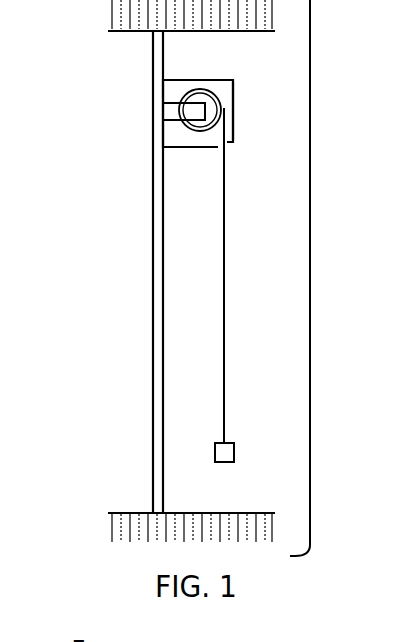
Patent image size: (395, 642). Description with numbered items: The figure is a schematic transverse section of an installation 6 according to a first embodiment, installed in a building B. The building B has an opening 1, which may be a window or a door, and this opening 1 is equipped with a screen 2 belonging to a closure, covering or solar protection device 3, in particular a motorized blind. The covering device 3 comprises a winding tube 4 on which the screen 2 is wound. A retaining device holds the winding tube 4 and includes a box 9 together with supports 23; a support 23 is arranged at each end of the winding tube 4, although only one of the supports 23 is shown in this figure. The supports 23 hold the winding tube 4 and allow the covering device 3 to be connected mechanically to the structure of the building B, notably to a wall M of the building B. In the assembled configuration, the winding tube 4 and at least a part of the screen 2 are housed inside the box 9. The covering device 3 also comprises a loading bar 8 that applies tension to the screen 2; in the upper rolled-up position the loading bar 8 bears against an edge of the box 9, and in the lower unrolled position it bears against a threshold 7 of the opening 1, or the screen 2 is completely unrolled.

The opening 1 is at (140, 210).
The screen 2 is at (226, 253).
The covering device 3 is at (190, 92).
The winding tube 4 is at (195, 93).
The installation 6 is at (310, 277).
The threshold 7 is at (131, 513).
The loading bar 8 is at (236, 450).
The box 9 is at (235, 117).
The support 23 is at (178, 112).
The building B is at (115, 20).
The wall M is at (158, 333).